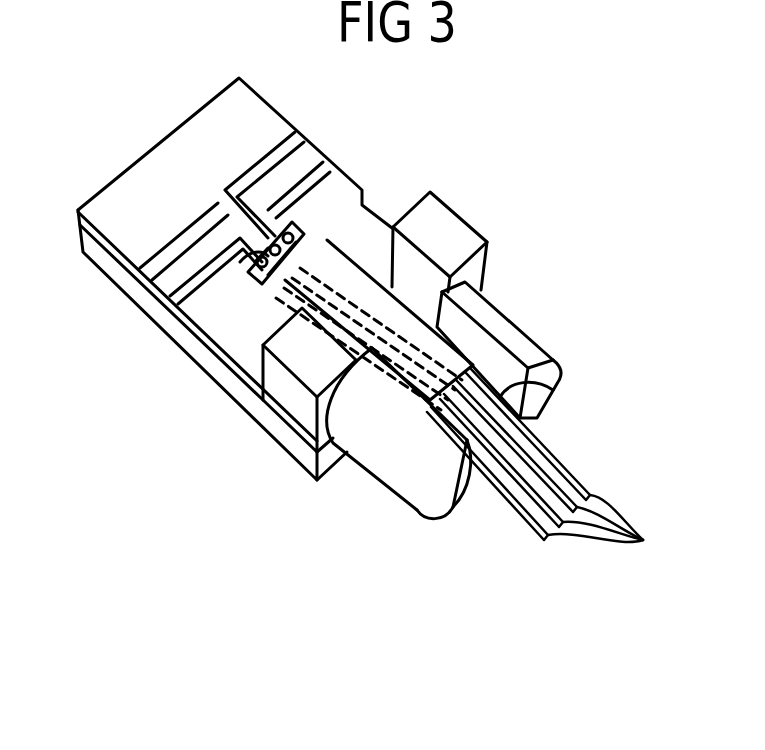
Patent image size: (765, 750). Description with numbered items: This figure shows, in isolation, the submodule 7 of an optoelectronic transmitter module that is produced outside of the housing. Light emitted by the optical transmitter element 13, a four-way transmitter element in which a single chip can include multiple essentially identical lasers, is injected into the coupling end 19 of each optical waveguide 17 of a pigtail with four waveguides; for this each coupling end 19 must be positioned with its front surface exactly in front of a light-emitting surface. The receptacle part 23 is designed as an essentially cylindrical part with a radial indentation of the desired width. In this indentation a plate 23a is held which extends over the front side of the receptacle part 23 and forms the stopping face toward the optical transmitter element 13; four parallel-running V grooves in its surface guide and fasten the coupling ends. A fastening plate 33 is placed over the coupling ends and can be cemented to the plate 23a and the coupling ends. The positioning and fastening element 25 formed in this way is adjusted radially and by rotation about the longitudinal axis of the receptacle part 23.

The submodule 7 is at (108, 178).
The optical transmitter element 13 is at (305, 205).
The coupling end 19 is at (262, 262).
The fastening plate 33 is at (350, 262).
The receptacle part 23 is at (497, 317).
The plate 23a is at (550, 388).
The positioning and fastening element 25 is at (358, 477).
The optical waveguide 17 is at (552, 464).